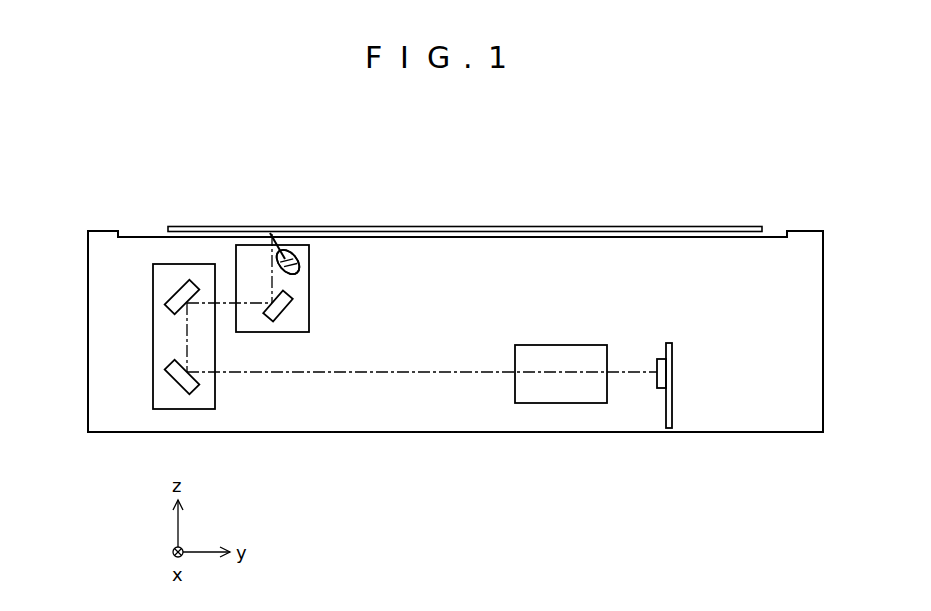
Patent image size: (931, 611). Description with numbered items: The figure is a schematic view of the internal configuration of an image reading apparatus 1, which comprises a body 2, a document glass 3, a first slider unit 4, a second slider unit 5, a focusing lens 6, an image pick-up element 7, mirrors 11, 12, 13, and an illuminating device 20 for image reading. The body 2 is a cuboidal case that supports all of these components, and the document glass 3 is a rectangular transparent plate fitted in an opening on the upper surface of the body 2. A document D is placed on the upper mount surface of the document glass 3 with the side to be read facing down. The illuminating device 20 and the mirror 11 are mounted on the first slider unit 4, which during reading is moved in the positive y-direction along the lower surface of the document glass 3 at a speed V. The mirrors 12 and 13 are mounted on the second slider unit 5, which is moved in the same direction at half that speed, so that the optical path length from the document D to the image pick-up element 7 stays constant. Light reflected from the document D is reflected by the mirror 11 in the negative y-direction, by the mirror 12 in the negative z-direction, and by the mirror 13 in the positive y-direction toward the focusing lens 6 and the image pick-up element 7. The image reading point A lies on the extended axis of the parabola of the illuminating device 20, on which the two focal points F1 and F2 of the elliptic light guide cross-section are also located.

The image reading apparatus 1 is at (153, 162).
The body 2 is at (800, 426).
The document glass 3 is at (781, 237).
The document D is at (728, 227).
The illuminating device 20 is at (279, 265).
The image reading point A is at (271, 231).
The focal point F1 is at (297, 271).
The focal point F2 is at (290, 249).
The first slider unit 4 is at (309, 319).
The mirror 11 is at (277, 317).
The second slider unit 5 is at (205, 398).
The mirror 12 is at (177, 300).
The mirror 13 is at (178, 383).
The focusing lens 6 is at (538, 352).
The image pick-up element 7 is at (660, 362).